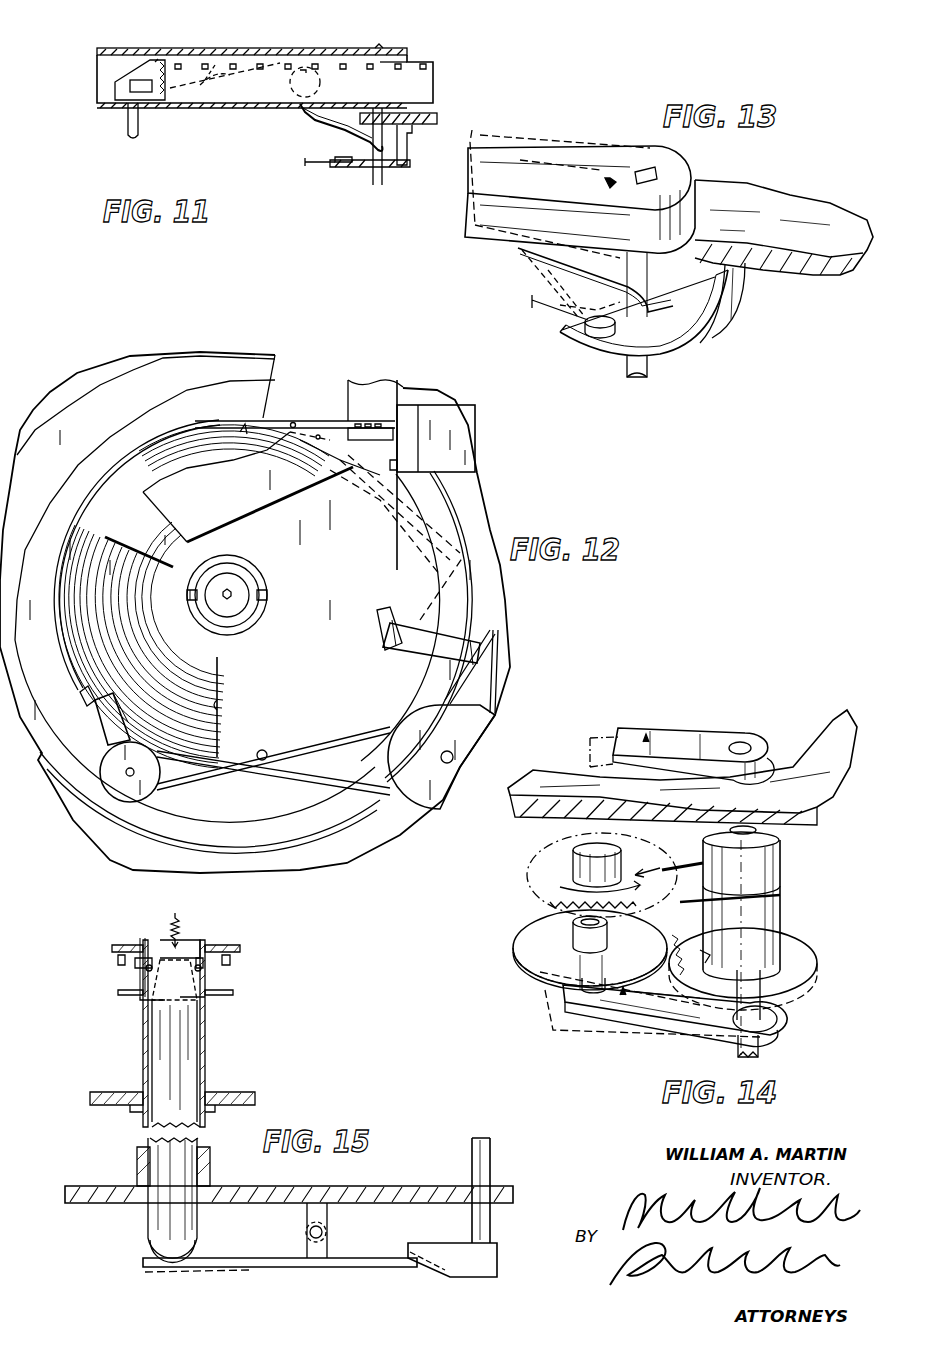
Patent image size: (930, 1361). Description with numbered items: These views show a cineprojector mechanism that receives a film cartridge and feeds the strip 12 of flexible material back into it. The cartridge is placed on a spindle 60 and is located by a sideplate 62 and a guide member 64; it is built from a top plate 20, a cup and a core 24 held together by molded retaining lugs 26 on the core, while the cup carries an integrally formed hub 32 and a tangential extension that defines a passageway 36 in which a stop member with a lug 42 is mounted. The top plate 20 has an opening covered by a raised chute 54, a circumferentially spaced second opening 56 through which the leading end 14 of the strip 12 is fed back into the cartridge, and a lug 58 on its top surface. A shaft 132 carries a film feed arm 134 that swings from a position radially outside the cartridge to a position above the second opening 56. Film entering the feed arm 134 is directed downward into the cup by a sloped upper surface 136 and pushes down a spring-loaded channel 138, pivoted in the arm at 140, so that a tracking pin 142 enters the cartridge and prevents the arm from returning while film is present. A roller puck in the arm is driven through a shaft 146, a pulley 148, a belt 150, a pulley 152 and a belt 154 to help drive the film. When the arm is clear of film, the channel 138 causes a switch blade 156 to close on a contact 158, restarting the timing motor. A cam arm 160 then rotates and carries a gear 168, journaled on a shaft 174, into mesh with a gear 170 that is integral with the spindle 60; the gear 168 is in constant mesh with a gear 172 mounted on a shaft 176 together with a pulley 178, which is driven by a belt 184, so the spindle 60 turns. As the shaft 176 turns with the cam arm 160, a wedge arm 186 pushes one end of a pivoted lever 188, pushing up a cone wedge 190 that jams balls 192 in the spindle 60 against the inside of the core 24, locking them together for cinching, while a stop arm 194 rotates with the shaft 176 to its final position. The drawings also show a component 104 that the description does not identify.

In FIG. 12, the strip of flexible material 12 is at (223, 669).
In FIG. 11, the leading end 14 is at (225, 100).
In FIG. 12, the leading end 14 is at (278, 420).
In FIG. 12, the top plate 20 is at (310, 683).
In FIG. 15, the top plate 20 is at (225, 945).
In FIG. 15, the core 24 is at (125, 962).
In FIG. 12, the retaining fingers or lugs 26 is at (262, 592).
In FIG. 15, the retaining fingers or lugs 26 is at (143, 940).
In FIG. 15, the hub 32 is at (212, 968).
In FIG. 12, the passageway 36 is at (296, 423).
In FIG. 12, the lug 42 is at (372, 415).
In FIG. 12, the raised portion or chute 54 is at (240, 503).
In FIG. 12, the second opening 56 is at (220, 707).
In FIG. 12, the lug 58 is at (365, 622).
In FIG. 12, the spindle 60 is at (230, 585).
In FIG. 14, the spindle 60 is at (575, 848).
In FIG. 15, the spindle 60 is at (142, 1042).
In FIG. 12, the sideplate 62 is at (397, 382).
In FIG. 12, the guide member 64 is at (462, 440).
In FIG. 12, the actuating arm 104 is at (378, 630).
In FIG. 11, the shaft 132 is at (378, 182).
In FIG. 13, the shaft 132 is at (650, 364).
In FIG. 12, the shaft 132 is at (445, 751).
In FIG. 11, the film feed arm 134 is at (200, 50).
In FIG. 13, the film feed arm 134 is at (520, 124).
In FIG. 12, the film feed arm 134 is at (100, 712).
In FIG. 11, the sloped upper surface 136 is at (97, 63).
In FIG. 11, the spring-loaded channel 138 is at (178, 108).
In FIG. 11, the pivot 140 is at (301, 54).
In FIG. 11, the tracking pin 142 is at (128, 128).
In FIG. 12, the shaft 146 is at (126, 772).
In FIG. 12, the pulley 148 is at (130, 792).
In FIG. 12, the belt 150 is at (270, 775).
In FIG. 12, the pulley 152 is at (440, 790).
In FIG. 12, the belt 154 is at (500, 682).
In FIG. 11, the switch blade 156 is at (300, 118).
In FIG. 13, the switch blade 156 is at (545, 282).
In FIG. 11, the contact 158 is at (312, 143).
In FIG. 13, the contact 158 is at (618, 322).
In FIG. 14, the cam arm 160 is at (676, 1020).
In FIG. 14, the gear 168 is at (515, 948).
In FIG. 14, the gear 170 is at (526, 871).
In FIG. 15, the gear 170 is at (100, 1092).
In FIG. 14, the gear 172 is at (800, 928).
In FIG. 14, the shaft 174 is at (573, 924).
In FIG. 14, the shaft 176 is at (760, 1050).
In FIG. 15, the shaft 176 is at (492, 1170).
In FIG. 14, the pulley 178 is at (782, 860).
In FIG. 14, the belt 184 is at (680, 865).
In FIG. 15, the wedge arm 186 is at (465, 1265).
In FIG. 15, the pivoted lever 188 is at (340, 1267).
In FIG. 14, the cone wedge 190 is at (575, 845).
In FIG. 15, the cone wedge 190 is at (198, 1040).
In FIG. 15, the balls 192 is at (150, 952).
In FIG. 14, the stop arm 194 is at (685, 745).